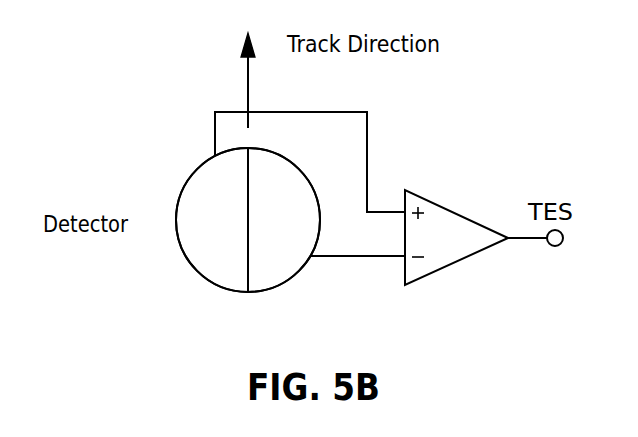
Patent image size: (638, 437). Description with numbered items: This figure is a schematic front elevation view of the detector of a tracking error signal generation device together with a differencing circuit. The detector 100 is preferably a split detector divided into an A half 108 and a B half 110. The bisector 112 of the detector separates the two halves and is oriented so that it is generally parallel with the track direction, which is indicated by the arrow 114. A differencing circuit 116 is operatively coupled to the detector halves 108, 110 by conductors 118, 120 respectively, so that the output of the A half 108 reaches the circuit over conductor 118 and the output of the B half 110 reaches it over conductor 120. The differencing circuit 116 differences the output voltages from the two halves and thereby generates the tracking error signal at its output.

The detector 100 is at (213, 185).
The A half 108 is at (220, 272).
The B half 110 is at (275, 272).
The bisector 112 is at (249, 190).
The arrow 114 is at (252, 92).
The differencing circuit 116 is at (463, 213).
The conductor 118 is at (368, 163).
The conductor 120 is at (332, 258).